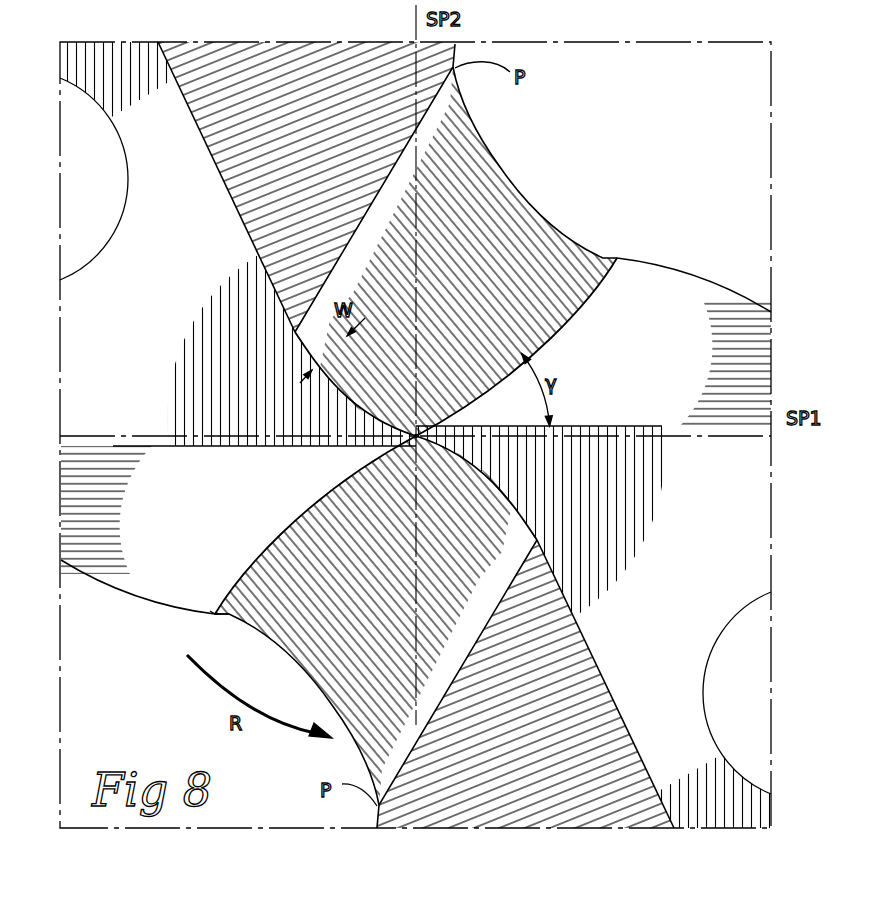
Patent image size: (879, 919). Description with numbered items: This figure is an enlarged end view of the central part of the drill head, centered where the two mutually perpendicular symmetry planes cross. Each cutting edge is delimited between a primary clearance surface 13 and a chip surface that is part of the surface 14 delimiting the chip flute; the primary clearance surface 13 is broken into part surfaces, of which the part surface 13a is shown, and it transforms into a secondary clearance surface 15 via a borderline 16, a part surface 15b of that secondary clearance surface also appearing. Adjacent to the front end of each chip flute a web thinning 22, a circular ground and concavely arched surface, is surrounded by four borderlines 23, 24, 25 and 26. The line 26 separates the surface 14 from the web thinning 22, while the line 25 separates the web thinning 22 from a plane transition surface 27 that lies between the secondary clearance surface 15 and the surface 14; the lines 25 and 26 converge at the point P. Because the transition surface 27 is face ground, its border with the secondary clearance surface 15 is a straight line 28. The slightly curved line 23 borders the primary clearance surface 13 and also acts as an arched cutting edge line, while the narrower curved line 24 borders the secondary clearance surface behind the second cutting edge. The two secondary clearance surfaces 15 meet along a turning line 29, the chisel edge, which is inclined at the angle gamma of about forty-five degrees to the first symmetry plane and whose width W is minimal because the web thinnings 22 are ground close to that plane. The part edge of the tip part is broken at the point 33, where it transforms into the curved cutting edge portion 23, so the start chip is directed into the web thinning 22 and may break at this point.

The primary clearance surface 13 is at (757, 329).
The part surface of primary clearance surface 13a is at (692, 342).
The surface delimiting the chip flute 14 is at (677, 159).
The secondary clearance surface 15 is at (151, 89).
The part surface of secondary clearance surface 15b is at (169, 325).
The borderline 16 is at (627, 425).
The web thinning 22 is at (476, 246).
The borderline 23 is at (560, 339).
The borderline 24 is at (340, 392).
The borderline 25 is at (477, 630).
The borderline 26 is at (288, 645).
The transition surface 27 is at (306, 146).
The borderline 28 is at (606, 688).
The turning line 29 is at (417, 437).
The point 33 is at (215, 616).